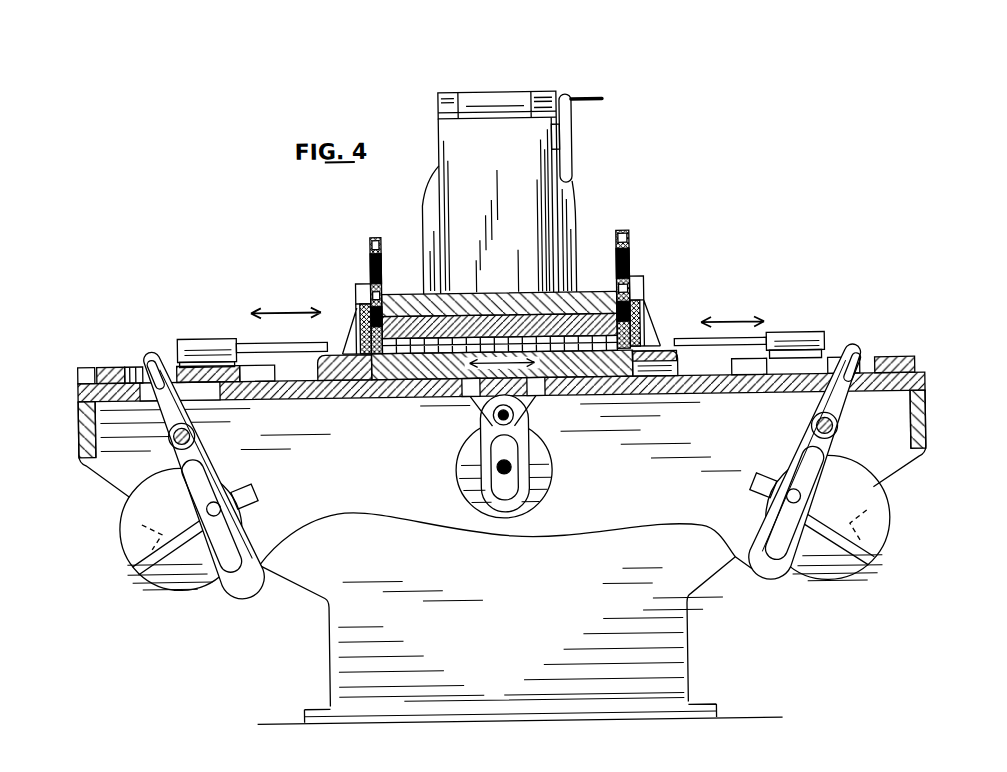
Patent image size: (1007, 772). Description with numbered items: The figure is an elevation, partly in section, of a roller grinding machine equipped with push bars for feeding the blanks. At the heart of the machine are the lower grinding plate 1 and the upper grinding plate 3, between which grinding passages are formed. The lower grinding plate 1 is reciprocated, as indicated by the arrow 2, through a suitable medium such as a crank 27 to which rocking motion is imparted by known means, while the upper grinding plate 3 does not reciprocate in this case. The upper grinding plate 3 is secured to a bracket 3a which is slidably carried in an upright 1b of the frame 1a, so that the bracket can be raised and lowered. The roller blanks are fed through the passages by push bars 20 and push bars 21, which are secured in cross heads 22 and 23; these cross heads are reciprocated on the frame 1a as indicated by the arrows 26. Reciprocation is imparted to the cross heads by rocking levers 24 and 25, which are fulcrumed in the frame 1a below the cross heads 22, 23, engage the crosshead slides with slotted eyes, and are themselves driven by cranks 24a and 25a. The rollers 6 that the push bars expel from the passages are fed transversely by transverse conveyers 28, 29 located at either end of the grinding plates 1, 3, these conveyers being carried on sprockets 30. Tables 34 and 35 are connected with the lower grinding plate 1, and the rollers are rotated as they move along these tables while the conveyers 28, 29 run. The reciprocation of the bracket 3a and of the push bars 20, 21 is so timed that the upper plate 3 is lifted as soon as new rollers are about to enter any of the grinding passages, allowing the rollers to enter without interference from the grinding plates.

The lower grinding plate 1 is at (405, 362).
The frame 1a is at (926, 425).
The upright 1b is at (455, 100).
The arrow 2 is at (472, 397).
The upper grinding plate 3 is at (576, 322).
The bracket 3a is at (498, 120).
The rollers 6 is at (438, 343).
The push bars 20 is at (720, 353).
The push bars 21 is at (265, 341).
The cross head 22 is at (800, 342).
The cross head 23 is at (206, 343).
The rocking lever 24 is at (842, 404).
The crank 24a is at (818, 570).
The rocking lever 25 is at (192, 412).
The crank 25a is at (183, 587).
The arrows 26 is at (508, 306).
The crank 27 is at (520, 418).
The transverse conveyer 28 is at (632, 252).
The transverse conveyer 29 is at (377, 258).
The sprockets 30 is at (365, 285).
The table 34 is at (668, 378).
The table 35 is at (352, 354).